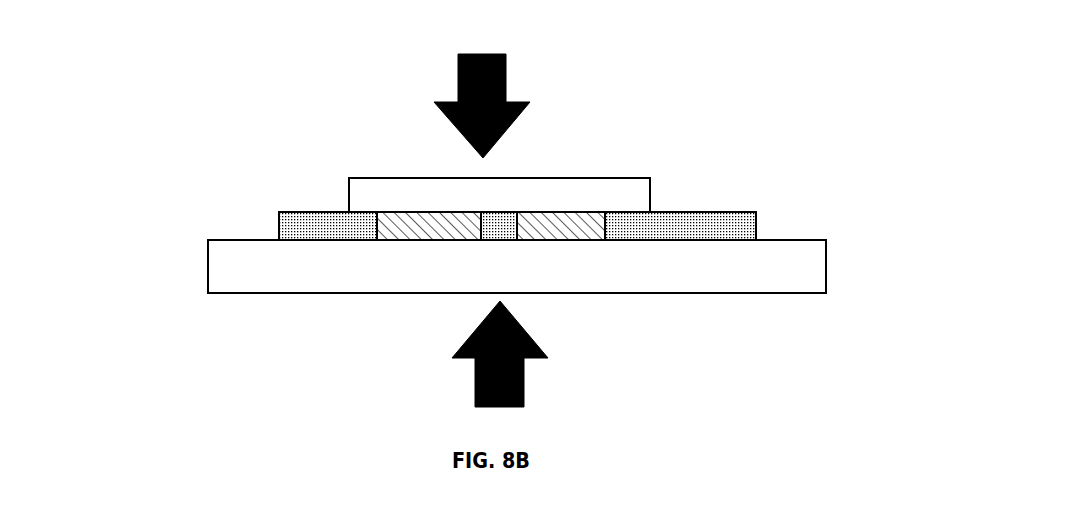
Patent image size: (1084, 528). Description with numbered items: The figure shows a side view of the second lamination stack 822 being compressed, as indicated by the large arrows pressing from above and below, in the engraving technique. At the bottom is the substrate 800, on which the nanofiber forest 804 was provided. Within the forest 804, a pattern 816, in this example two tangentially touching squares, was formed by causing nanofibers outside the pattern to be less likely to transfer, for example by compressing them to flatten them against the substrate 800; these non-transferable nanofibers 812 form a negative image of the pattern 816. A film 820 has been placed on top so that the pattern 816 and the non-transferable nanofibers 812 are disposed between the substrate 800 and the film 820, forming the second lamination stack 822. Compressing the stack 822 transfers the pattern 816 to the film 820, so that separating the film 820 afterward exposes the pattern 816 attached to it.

The substrate 800 is at (826, 267).
The nanofiber forest 804 is at (756, 228).
The non-transferable nanofibers 812 is at (313, 195).
The pattern 816 is at (515, 240).
The film 820 is at (650, 197).
The second lamination stack 822 is at (205, 159).